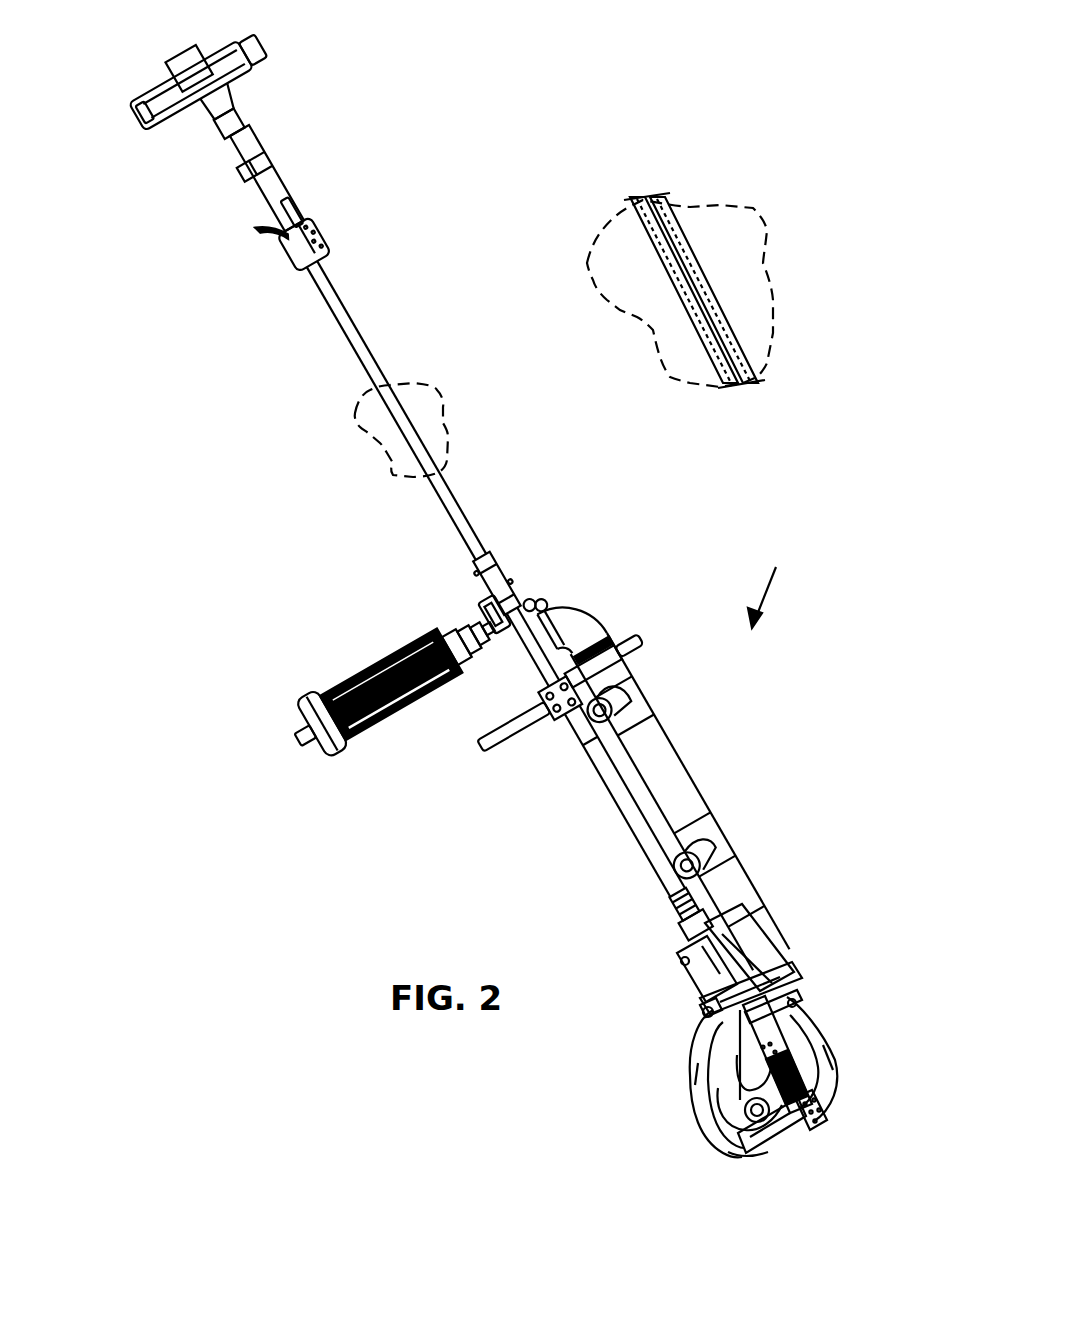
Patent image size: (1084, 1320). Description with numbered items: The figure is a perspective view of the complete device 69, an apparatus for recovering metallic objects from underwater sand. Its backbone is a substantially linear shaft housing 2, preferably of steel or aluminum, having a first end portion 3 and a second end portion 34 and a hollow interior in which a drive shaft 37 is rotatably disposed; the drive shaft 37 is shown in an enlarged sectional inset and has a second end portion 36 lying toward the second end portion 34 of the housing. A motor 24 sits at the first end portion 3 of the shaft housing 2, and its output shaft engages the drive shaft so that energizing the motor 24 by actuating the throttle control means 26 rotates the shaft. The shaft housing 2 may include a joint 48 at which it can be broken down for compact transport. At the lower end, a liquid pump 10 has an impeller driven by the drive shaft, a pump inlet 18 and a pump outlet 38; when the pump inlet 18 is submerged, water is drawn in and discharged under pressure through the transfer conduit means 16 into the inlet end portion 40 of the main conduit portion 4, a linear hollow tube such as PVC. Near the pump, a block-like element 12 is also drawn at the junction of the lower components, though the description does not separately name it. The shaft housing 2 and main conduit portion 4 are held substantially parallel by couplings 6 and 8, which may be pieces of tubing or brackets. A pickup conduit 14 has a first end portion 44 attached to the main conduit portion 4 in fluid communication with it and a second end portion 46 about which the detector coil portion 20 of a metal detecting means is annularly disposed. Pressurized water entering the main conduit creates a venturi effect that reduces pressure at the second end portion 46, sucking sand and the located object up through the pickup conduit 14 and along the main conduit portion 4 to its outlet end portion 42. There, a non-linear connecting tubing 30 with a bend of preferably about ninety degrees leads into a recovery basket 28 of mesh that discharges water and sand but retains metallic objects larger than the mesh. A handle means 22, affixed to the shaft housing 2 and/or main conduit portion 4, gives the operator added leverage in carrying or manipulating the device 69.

The shaft housing 2 is at (340, 315).
The first end portion of the shaft housing 3 is at (272, 191).
The main conduit portion 4 is at (658, 758).
The coupling 6 is at (622, 726).
The coupling 8 is at (700, 870).
The liquid pump 10 is at (745, 1057).
The block 12 is at (741, 950).
The pickup conduit 14 is at (730, 1091).
The transfer conduit means 16 is at (828, 1084).
The pump inlet 18 is at (826, 1127).
The detector coil portion 20 is at (790, 1148).
The handle means 22 is at (503, 735).
The motor 24 is at (152, 117).
The throttle control means 26 is at (292, 259).
The recovery basket 28 is at (372, 664).
The connecting tubing 30 is at (580, 631).
The second end portion of the shaft housing 34 is at (676, 904).
The second end portion of the drive shaft 36 is at (688, 976).
The drive shaft 37 is at (678, 271).
The pump outlet 38 is at (712, 1008).
The inlet end portion of the main conduit 40 is at (800, 970).
The outlet end portion of the main conduit 42 is at (607, 650).
The first end portion of the pickup conduit 44 is at (795, 1002).
The second end portion of the pickup conduit 46 is at (742, 1154).
The joint 48 is at (499, 592).
The device 69 is at (774, 581).